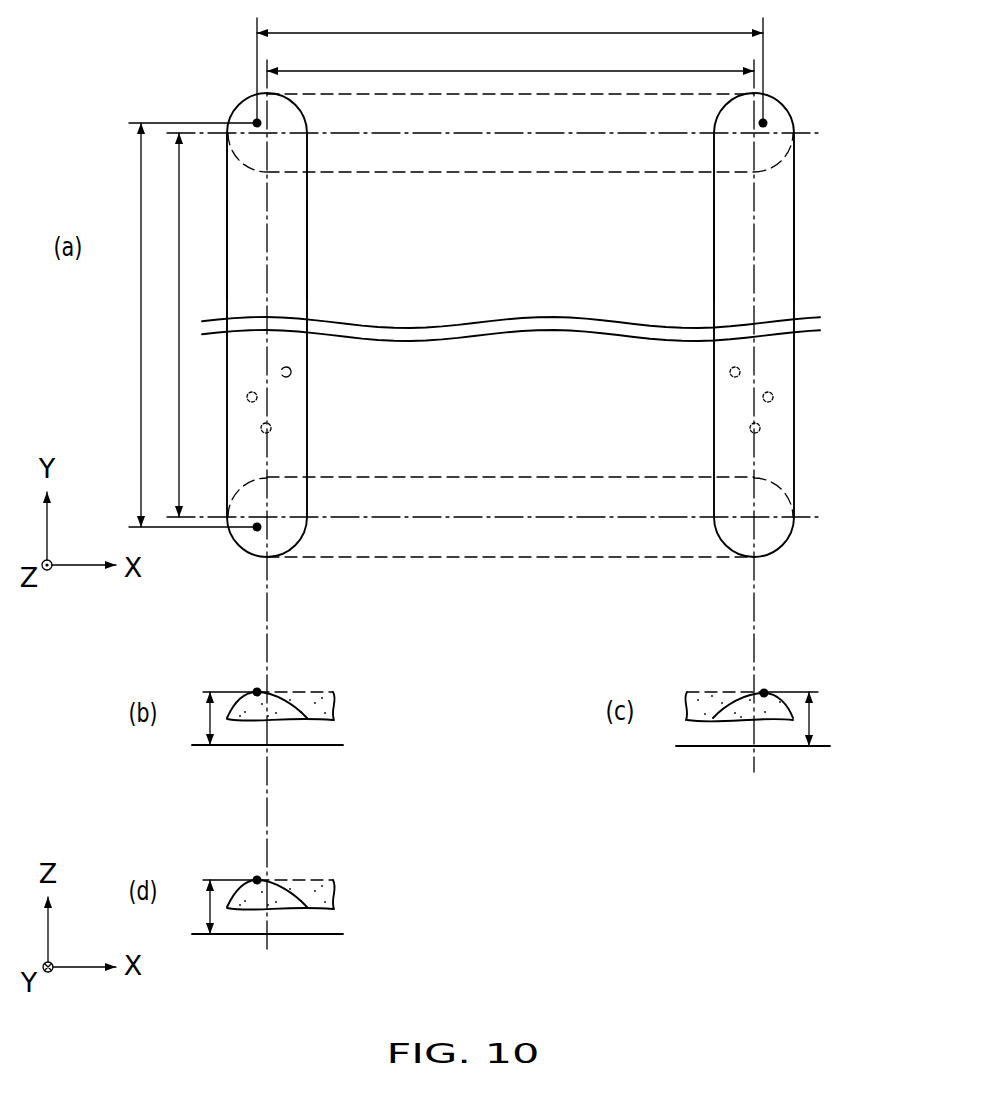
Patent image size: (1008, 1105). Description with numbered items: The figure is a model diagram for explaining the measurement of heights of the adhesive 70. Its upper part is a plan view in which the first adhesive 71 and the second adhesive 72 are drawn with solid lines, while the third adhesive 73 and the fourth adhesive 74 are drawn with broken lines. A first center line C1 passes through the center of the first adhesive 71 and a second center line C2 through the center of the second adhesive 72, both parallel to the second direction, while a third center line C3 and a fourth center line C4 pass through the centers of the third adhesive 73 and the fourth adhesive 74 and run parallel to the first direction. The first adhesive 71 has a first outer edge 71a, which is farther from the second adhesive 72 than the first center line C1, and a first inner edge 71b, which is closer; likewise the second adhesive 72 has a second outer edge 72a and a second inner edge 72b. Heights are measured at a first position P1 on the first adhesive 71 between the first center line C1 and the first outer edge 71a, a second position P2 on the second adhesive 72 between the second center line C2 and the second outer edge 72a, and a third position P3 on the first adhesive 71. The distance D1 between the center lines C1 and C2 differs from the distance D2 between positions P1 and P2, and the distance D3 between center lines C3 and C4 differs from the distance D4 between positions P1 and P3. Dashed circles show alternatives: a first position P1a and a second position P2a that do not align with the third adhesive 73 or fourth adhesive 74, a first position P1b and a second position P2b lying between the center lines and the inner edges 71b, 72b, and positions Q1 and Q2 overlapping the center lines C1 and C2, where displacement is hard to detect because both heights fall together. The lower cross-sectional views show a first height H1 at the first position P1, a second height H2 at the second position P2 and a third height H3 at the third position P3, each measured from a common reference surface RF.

The adhesive 70 is at (848, 188).
The first adhesive 71 is at (290, 248).
The first outer edge 71a is at (227, 283).
The first inner edge 71b is at (307, 292).
The second adhesive 72 is at (782, 239).
The second outer edge 72a is at (794, 292).
The second inner edge 72b is at (714, 292).
The third adhesive 73 is at (580, 176).
The fourth adhesive 74 is at (505, 560).
The first position P1 is at (254, 121).
The second position P2 is at (766, 121).
The third position P3 is at (255, 529).
The first position P1a is at (258, 397).
The first position P1b is at (292, 372).
The second position P2a is at (762, 397).
The second position P2b is at (729, 372).
The position Q1 is at (272, 428).
The position Q2 is at (749, 428).
The first center line C1 is at (267, 215).
The second center line C2 is at (753, 226).
The third center line C3 is at (490, 136).
The fourth center line C4 is at (483, 514).
The distance D1 is at (510, 58).
The distance D2 is at (510, 20).
The distance D3 is at (162, 325).
The distance D4 is at (182, 325).
The first height H1 is at (192, 718).
The second height H2 is at (829, 719).
The third height H3 is at (192, 907).
The reference surface RF is at (340, 745).